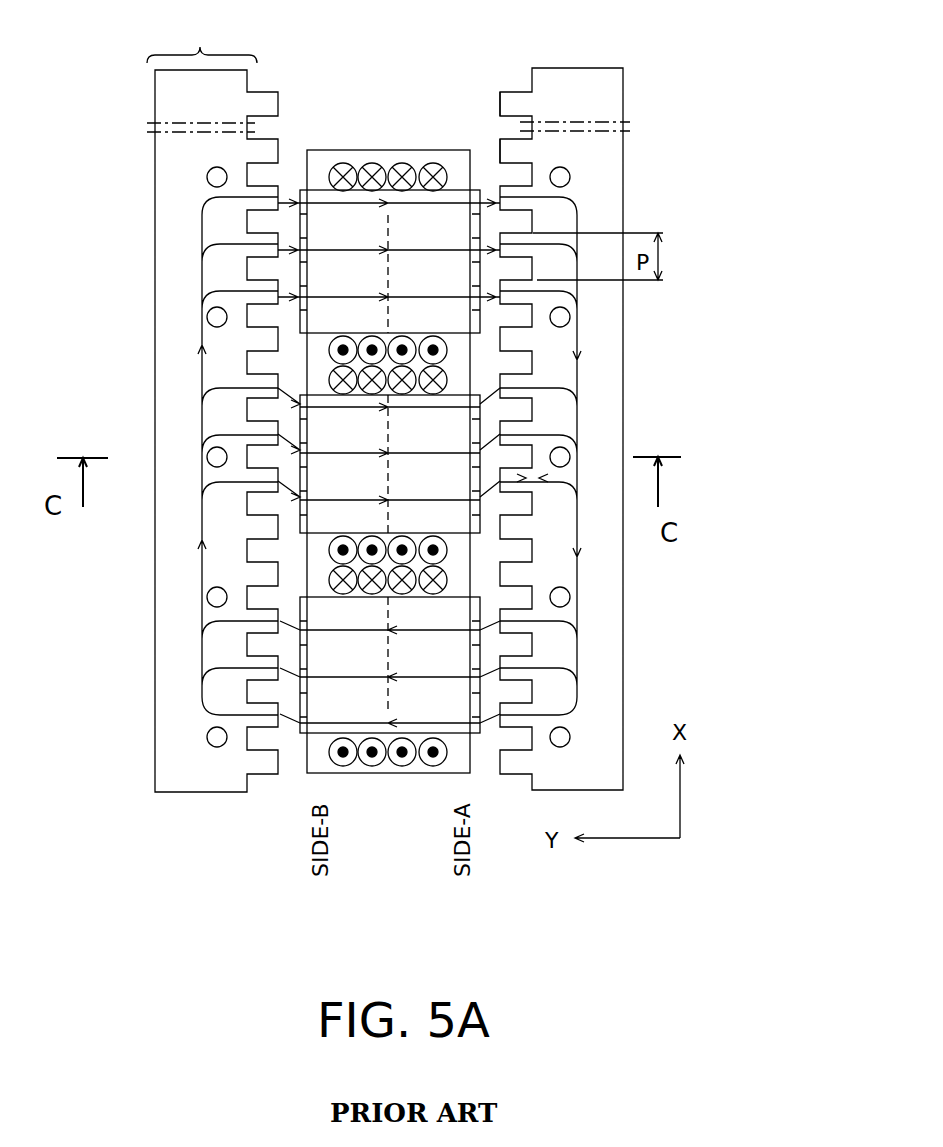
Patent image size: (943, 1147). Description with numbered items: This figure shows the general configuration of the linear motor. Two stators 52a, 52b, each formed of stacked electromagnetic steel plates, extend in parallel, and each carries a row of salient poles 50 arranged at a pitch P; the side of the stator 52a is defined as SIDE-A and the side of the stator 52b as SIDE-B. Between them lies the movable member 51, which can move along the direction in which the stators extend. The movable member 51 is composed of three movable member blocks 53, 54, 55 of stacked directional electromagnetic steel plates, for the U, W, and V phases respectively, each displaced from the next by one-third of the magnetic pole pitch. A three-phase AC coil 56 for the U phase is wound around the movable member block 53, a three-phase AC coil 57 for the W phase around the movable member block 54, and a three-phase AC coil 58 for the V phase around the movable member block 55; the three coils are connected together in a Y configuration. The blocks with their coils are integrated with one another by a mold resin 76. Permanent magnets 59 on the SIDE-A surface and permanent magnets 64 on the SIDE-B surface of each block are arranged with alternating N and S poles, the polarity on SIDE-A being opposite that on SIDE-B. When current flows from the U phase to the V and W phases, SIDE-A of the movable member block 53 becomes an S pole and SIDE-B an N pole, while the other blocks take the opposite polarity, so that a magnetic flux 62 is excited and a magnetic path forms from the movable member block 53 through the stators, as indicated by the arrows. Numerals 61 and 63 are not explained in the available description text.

The salient poles 50 is at (507, 140).
The movable member 51 is at (396, 150).
The stator 52a is at (603, 165).
The stator 52b is at (183, 313).
The movable member block 53 is at (352, 698).
The movable member block 54 is at (340, 512).
The movable member block 55 is at (342, 226).
The three-phase AC coil 56 is at (392, 773).
The three-phase AC coil 57 is at (447, 553).
The three-phase AC coil 58 is at (447, 353).
The permanent magnets 59 is at (478, 226).
The yoke width 61 is at (202, 38).
The magnetic flux 62 is at (200, 622).
The center line 63 is at (387, 233).
The permanent magnets 64 is at (298, 418).
The mold resin 76 is at (318, 163).